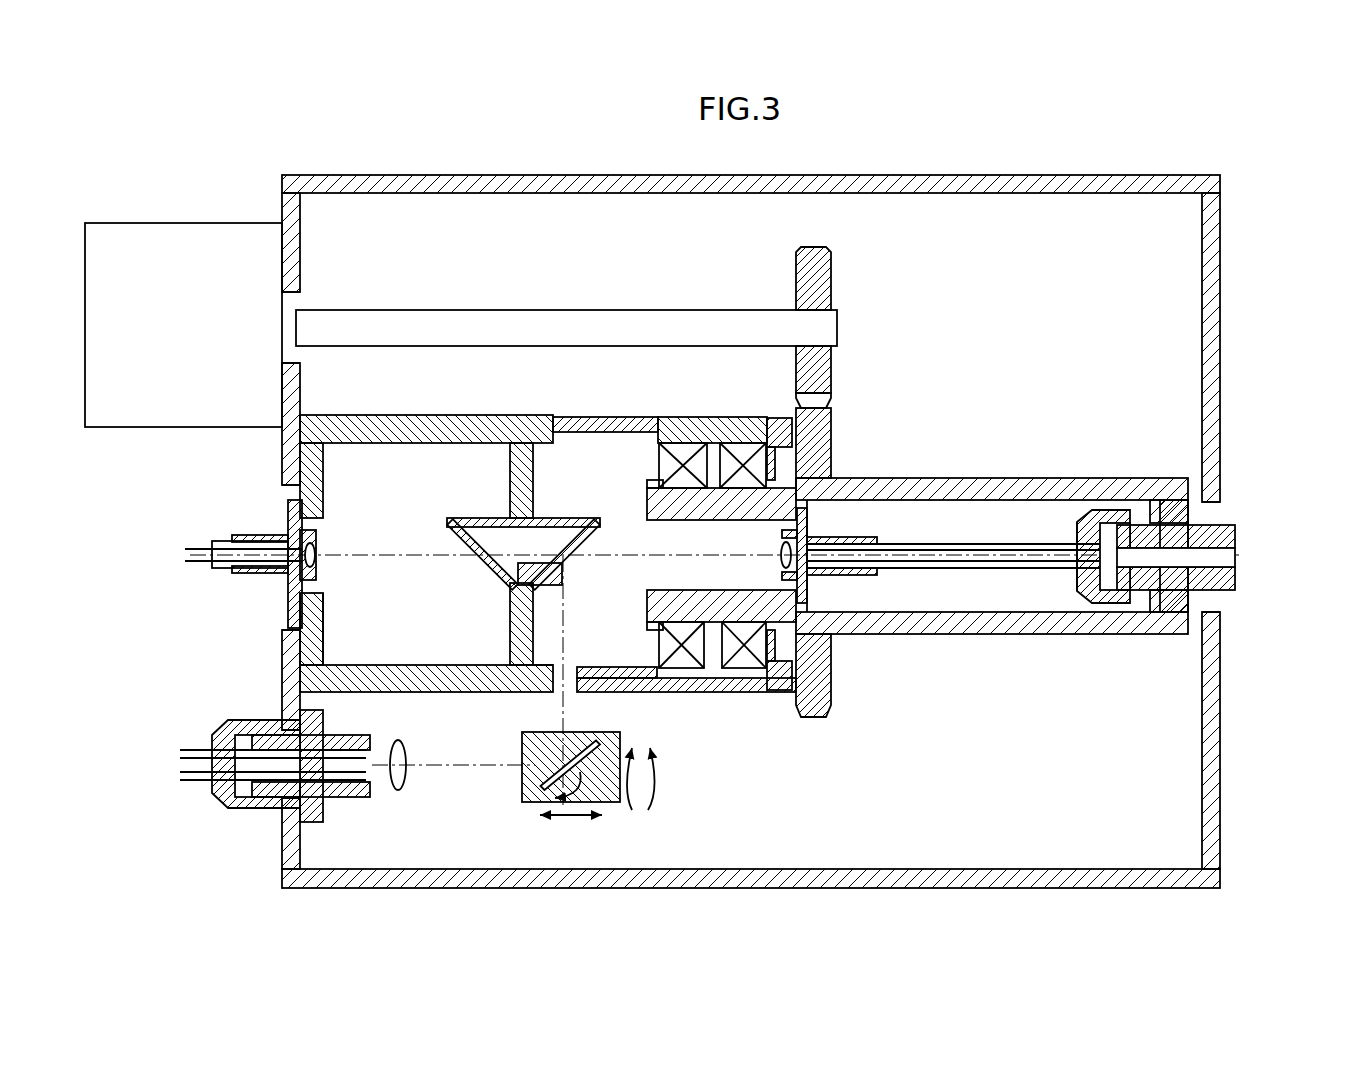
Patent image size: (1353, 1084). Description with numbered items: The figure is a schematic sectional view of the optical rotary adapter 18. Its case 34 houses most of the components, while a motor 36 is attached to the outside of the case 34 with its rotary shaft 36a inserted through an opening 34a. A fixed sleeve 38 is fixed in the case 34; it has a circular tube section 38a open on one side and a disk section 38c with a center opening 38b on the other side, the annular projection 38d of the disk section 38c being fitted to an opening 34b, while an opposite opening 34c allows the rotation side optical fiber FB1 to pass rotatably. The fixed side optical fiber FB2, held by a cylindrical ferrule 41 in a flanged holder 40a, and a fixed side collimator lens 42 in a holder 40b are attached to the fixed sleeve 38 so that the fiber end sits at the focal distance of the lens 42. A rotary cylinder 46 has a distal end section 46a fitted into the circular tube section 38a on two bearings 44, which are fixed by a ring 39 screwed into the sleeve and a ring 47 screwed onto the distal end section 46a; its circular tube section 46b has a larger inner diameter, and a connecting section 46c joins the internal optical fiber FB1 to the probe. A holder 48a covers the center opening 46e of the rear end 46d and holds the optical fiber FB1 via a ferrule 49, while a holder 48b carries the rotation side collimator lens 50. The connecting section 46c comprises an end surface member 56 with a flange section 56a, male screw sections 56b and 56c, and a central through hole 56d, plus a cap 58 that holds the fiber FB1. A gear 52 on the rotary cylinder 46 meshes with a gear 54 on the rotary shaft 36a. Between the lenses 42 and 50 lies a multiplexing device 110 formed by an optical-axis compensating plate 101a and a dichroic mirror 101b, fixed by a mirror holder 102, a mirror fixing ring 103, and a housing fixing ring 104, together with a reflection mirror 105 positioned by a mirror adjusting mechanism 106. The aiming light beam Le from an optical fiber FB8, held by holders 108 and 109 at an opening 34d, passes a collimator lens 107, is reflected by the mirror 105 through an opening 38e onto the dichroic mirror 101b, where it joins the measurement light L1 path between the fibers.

The optical rotary adapter 18 is at (182, 642).
The case 34 is at (918, 175).
The opening 34a is at (302, 304).
The opening 34b is at (288, 490).
The opening 34c is at (1220, 505).
The opening 34d is at (272, 800).
The motor 36 is at (191, 232).
The rotary shaft 36a is at (700, 318).
The fixed sleeve 38 is at (684, 440).
The circular tube section 38a is at (722, 693).
The center opening 38b is at (322, 588).
The disk section 38c is at (300, 667).
The annular projection 38d is at (300, 620).
The opening 38e is at (548, 692).
The ring 39 is at (775, 420).
The holder 40a is at (250, 535).
The holder 40b is at (316, 536).
The ferrule 41 is at (232, 540).
The fixed side collimator lens 42 is at (318, 558).
The bearings 44 is at (680, 450).
The rotary cylinder 46 is at (992, 478).
The distal end section 46a is at (695, 508).
The circular tube section 46b is at (987, 634).
The connecting section 46c is at (1228, 600).
The rear end 46d is at (806, 603).
The center opening 46e is at (808, 488).
The ring 47 is at (650, 672).
The holder 48a is at (808, 532).
The holder 48b is at (782, 533).
The ferrule 49 is at (880, 554).
The rotation side collimator lens 50 is at (778, 565).
The gear 52 is at (830, 426).
The gear 54 is at (830, 275).
The end surface member 56 is at (1172, 592).
The flange section 56a is at (1158, 512).
The male screw section 56b is at (1130, 592).
The male screw section 56c is at (1236, 530).
The central through hole 56d is at (1236, 560).
The cap 58 is at (1083, 528).
The optical-axis compensating plate 101a is at (487, 562).
The dichroic mirror 101b is at (580, 547).
The mirror holder 102 is at (548, 590).
The mirror fixing ring 103 is at (440, 520).
The housing fixing ring 104 is at (577, 440).
The reflection mirror 105 is at (525, 790).
The mirror adjusting mechanism 106 is at (605, 805).
The collimator lens 107 is at (405, 792).
The holder 108 is at (335, 800).
The holder 109 is at (222, 803).
The multiplexing device 110 is at (556, 488).
The measurement light L1 is at (368, 520).
The aiming light beam Le is at (450, 760).
The rotation side optical fiber FB1 is at (1000, 556).
The fixed side optical fiber FB2 is at (207, 552).
The optical fiber FB8 is at (190, 767).